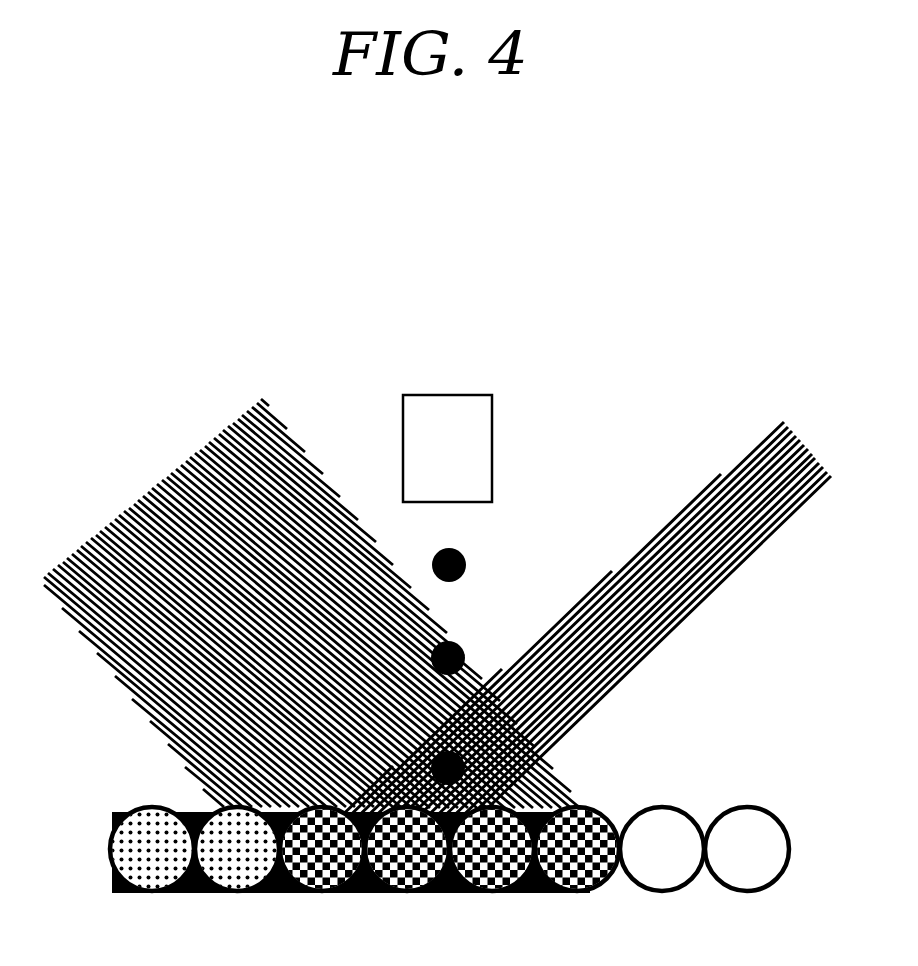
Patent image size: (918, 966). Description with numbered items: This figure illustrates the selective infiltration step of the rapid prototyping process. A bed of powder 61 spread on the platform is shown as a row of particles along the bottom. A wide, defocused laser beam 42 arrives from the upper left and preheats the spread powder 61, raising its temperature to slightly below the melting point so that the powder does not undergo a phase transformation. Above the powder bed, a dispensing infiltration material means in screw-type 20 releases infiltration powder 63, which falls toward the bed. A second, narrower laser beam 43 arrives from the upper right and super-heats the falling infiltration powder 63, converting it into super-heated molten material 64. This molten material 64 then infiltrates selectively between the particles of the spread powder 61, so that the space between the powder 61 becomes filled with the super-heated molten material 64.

The dispensing infiltration material means in screw-type 20 is at (499, 445).
The laser beam 42 is at (312, 603).
The laser beam 43 is at (579, 626).
The powder 61 is at (449, 886).
The infiltration powder 63 is at (499, 549).
The super-heated molten material 64 is at (535, 750).